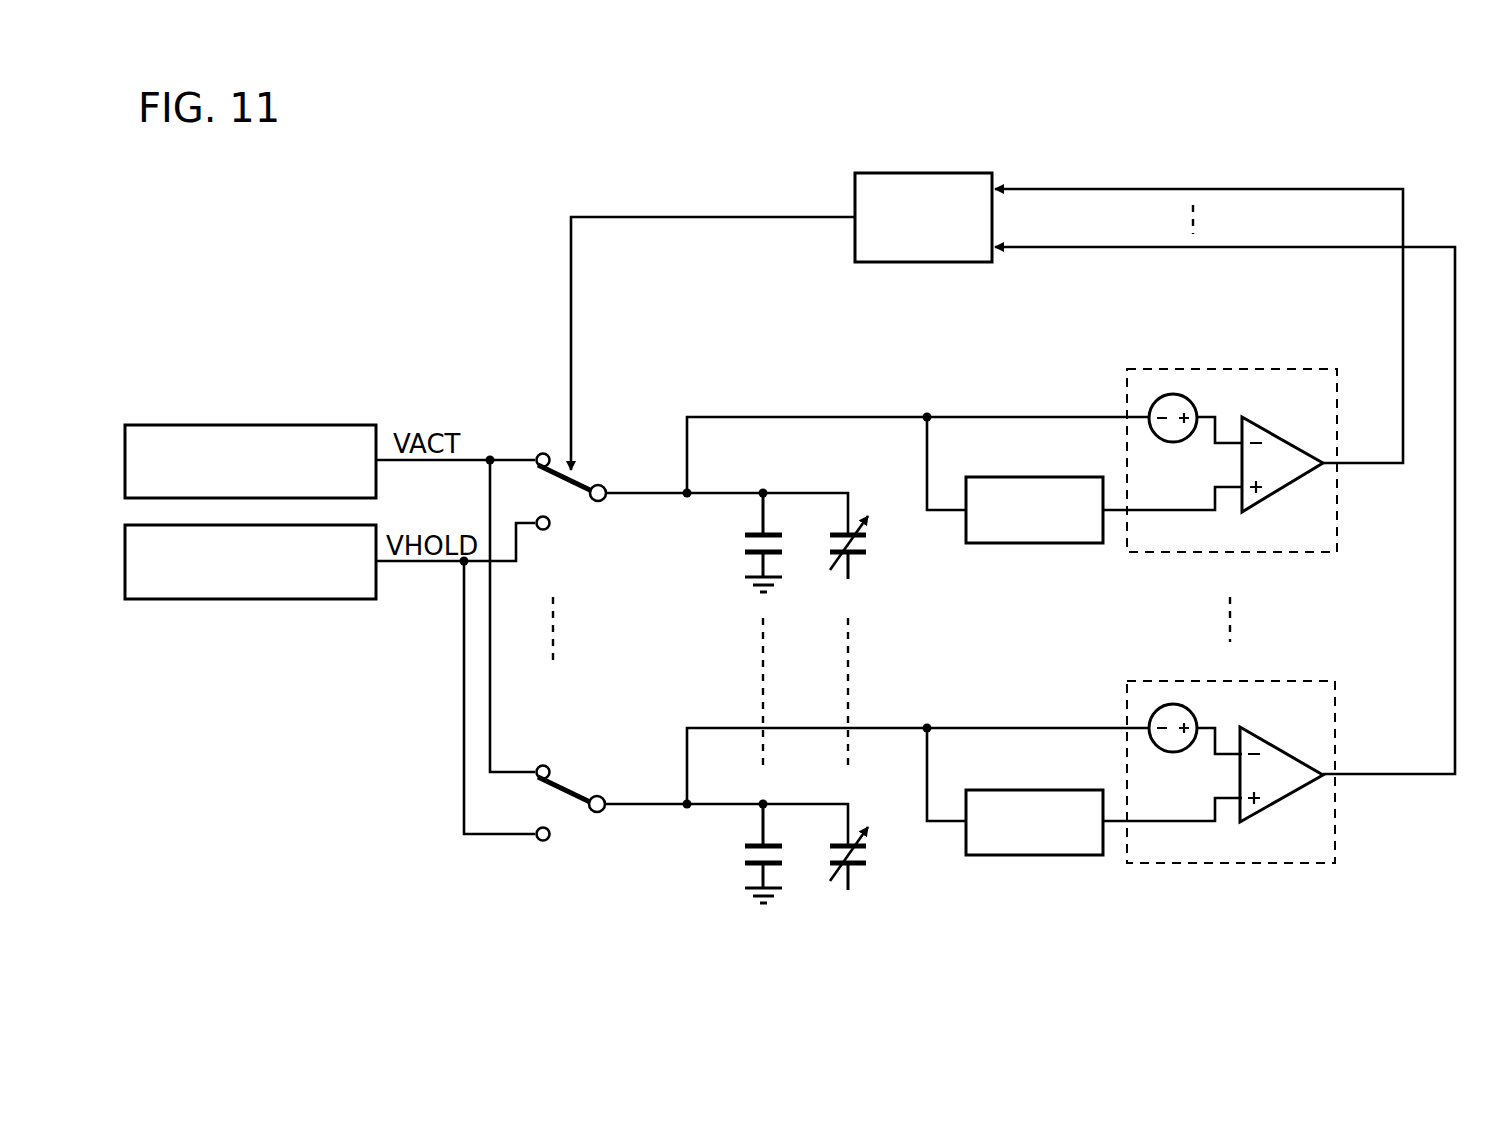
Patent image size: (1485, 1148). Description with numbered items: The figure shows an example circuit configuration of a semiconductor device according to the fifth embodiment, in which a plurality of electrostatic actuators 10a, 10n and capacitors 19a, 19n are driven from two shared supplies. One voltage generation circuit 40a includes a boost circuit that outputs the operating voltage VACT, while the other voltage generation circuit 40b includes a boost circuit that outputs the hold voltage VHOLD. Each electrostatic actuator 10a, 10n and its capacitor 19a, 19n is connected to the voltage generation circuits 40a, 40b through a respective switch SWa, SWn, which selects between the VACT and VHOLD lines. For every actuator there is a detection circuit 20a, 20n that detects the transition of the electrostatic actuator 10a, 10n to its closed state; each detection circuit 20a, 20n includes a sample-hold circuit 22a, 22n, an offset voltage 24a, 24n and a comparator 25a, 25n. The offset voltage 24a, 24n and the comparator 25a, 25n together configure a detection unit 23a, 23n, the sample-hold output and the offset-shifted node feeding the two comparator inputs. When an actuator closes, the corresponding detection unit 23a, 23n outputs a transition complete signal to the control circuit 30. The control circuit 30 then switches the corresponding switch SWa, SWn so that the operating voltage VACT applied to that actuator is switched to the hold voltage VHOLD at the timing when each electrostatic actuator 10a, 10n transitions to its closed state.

The voltage generation circuit 40a is at (258, 425).
The voltage generation circuit 40b is at (258, 599).
The control circuit 30 is at (925, 173).
The switch SWa is at (600, 455).
The switch SWn is at (588, 772).
The capacitor 19a is at (728, 548).
The capacitor 19n is at (728, 853).
The electrostatic actuator 10a is at (880, 550).
The electrostatic actuator 10n is at (880, 853).
The sample-hold circuit 22a is at (1030, 543).
The sample-hold circuit 22n is at (1030, 855).
The detection circuit 20a is at (1202, 425).
The detection circuit 20n is at (1201, 742).
The detection unit 23a is at (1236, 368).
The detection unit 23n is at (1287, 680).
The offset voltage 24a is at (1173, 442).
The offset voltage 24n is at (1173, 752).
The comparator 25a is at (1283, 436).
The comparator 25n is at (1283, 744).